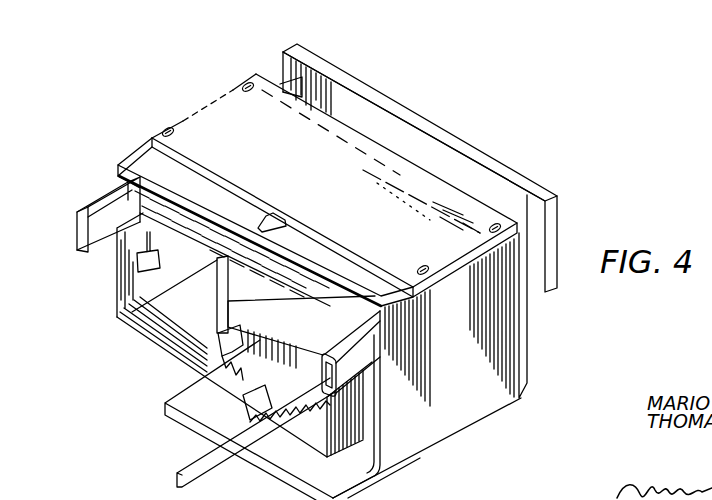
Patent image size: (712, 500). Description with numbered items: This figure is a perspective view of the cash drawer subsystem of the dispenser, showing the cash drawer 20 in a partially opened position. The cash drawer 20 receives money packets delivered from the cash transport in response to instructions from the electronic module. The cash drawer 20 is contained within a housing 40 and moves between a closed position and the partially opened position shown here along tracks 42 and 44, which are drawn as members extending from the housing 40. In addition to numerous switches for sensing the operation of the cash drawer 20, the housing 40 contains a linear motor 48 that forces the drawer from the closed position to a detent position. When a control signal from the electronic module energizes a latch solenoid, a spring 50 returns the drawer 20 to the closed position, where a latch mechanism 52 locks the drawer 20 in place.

The cash drawer 20 is at (123, 188).
The housing 40 is at (513, 368).
The track 42 is at (357, 377).
The track 44 is at (77, 235).
The linear motor 48 is at (307, 330).
The spring 50 is at (240, 428).
The latch mechanism 52 is at (213, 352).